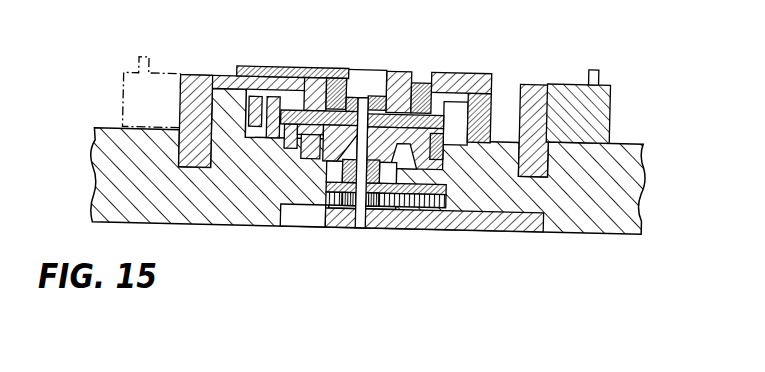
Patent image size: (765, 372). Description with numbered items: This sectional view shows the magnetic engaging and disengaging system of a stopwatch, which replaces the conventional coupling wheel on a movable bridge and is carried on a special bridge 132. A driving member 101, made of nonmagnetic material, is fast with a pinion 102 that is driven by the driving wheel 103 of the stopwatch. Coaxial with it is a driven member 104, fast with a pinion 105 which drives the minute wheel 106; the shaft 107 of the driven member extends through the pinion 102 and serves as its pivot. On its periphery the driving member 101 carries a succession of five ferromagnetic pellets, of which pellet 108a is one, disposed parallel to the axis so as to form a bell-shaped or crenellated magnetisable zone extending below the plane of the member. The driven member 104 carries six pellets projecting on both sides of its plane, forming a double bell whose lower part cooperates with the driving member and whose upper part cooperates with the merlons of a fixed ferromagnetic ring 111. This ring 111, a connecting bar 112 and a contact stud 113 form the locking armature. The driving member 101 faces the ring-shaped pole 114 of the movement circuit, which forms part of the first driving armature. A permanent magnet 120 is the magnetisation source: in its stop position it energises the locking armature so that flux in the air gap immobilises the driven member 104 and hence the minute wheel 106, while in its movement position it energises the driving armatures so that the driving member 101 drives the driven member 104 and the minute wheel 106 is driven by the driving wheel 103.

The driving member 101 is at (325, 127).
The pinion 102 is at (393, 164).
The driving wheel 103 is at (446, 222).
The driven member 104 is at (392, 108).
The pinion 105 is at (366, 215).
The minute wheel 106 is at (327, 212).
The shaft 107 is at (348, 207).
The ferromagnetic pellet 108a is at (288, 152).
The ferromagnetic ring 111 is at (426, 86).
The connecting bar 112 is at (227, 80).
The contact stud 113 is at (179, 111).
The pole 114 is at (345, 134).
The permanent magnet 120 is at (609, 103).
The special bridge 132 is at (632, 237).